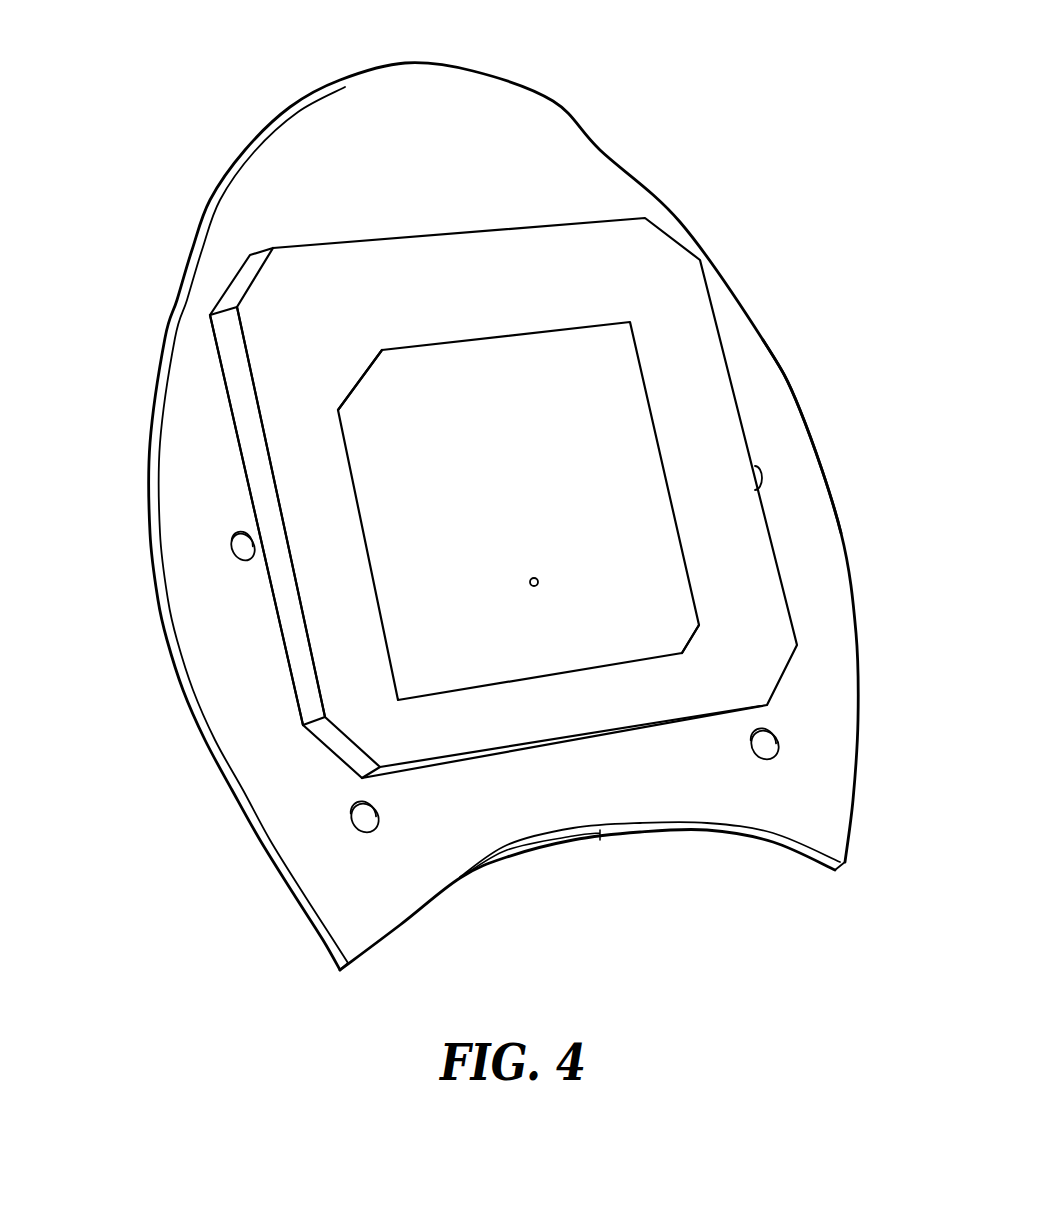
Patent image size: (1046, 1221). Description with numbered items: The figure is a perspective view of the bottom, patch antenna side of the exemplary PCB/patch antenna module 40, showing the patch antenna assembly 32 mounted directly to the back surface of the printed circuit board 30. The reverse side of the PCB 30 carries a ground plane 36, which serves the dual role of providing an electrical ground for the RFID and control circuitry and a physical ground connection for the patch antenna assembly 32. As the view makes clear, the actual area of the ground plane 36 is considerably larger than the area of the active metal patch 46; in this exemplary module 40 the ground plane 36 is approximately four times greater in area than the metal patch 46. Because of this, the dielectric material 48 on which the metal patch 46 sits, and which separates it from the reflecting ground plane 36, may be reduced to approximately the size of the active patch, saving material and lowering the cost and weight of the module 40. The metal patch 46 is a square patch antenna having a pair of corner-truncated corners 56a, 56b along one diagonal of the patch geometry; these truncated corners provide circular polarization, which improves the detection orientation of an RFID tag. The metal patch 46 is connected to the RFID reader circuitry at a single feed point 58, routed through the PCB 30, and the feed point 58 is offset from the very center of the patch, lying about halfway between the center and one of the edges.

The printed circuit board 30 is at (158, 540).
The patch antenna assembly 32 is at (237, 378).
The ground plane 36 is at (780, 433).
The PCB/patch antenna module 40 is at (194, 90).
The metal patch 46 is at (468, 662).
The dielectric material 48 is at (667, 247).
The corner-truncated corner 56a is at (360, 380).
The corner-truncated corner 56b is at (693, 640).
The feed point 58 is at (540, 580).